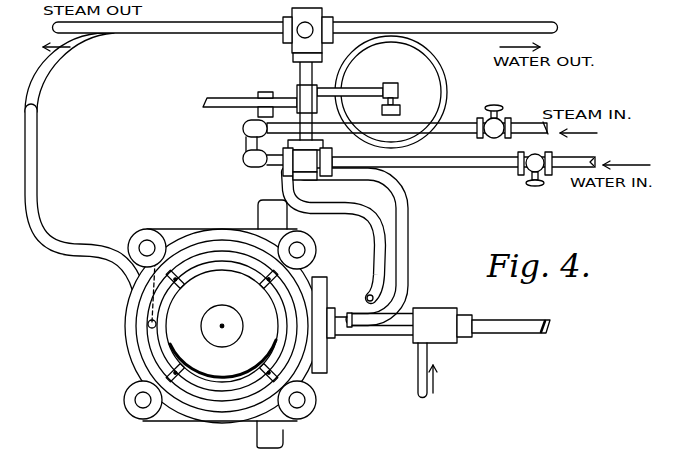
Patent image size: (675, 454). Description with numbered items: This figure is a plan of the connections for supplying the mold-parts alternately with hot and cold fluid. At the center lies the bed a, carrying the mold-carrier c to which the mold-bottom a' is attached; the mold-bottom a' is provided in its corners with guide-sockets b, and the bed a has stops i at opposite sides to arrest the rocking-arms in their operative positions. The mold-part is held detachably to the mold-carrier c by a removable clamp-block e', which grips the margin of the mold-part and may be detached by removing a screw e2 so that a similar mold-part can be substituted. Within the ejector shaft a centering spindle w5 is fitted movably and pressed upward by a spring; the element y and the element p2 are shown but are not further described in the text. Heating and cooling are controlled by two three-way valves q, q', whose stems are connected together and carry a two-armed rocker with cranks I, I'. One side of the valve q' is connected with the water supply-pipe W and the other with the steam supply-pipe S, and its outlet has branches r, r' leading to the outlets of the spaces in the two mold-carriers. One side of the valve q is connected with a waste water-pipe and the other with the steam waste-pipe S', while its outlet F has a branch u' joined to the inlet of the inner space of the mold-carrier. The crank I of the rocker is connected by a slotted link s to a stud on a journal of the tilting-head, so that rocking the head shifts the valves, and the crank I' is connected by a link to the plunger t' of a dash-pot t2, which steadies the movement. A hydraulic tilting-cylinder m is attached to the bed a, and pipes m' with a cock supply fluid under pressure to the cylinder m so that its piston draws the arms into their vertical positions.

The steam waste-pipe S' is at (173, 41).
The outlet F is at (300, 27).
The three-way valve q is at (286, 50).
The crank of rocker I' is at (250, 85).
The slotted link s is at (241, 97).
The crank of rocker I is at (350, 79).
The plunger t' is at (392, 87).
The dash-pot t2 is at (450, 72).
The steam supply-pipe S is at (272, 155).
The three-way valve q' is at (328, 187).
The water supply-pipe W is at (498, 168).
The branch r is at (365, 254).
The branch r' is at (333, 236).
The branch u' is at (84, 167).
The bed a is at (222, 314).
The mold-carrier c is at (137, 340).
The mold-bottom a' is at (222, 326).
The centering spindle w5 is at (222, 322).
The shaft center y is at (243, 325).
The guide-sockets b is at (316, 248).
The stops i is at (258, 205).
The clamp-block e' is at (213, 353).
The screw e2 is at (322, 373).
The hydraulic tilting-cylinder m is at (422, 338).
The pipes m' is at (403, 370).
The outlet pipe p2 is at (518, 330).